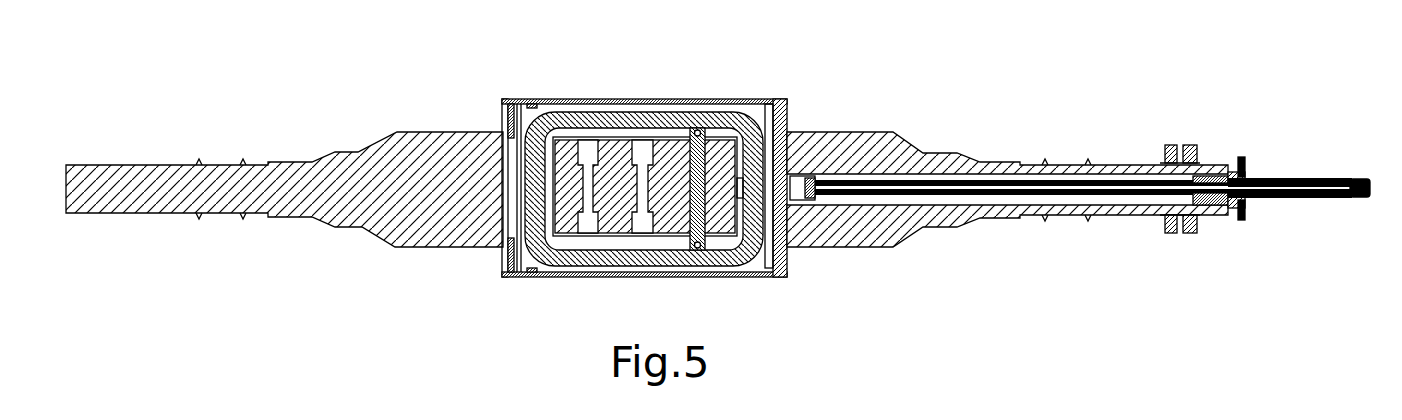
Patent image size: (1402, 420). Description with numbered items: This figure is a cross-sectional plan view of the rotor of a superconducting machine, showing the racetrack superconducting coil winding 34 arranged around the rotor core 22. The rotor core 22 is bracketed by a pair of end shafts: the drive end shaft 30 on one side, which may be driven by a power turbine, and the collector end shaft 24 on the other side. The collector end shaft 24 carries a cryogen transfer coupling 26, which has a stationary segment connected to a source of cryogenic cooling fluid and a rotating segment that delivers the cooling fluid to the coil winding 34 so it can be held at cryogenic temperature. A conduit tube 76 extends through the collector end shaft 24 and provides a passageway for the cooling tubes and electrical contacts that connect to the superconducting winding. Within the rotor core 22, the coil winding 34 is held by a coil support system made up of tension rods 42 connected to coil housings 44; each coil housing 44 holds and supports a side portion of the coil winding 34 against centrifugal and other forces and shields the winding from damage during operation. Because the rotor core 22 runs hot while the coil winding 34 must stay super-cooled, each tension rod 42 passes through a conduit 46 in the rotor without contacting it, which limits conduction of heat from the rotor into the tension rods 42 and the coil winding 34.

The rotor core 22 is at (612, 220).
The collector end shaft 24 is at (855, 228).
The cryogen transfer coupling 26 is at (1277, 198).
The drive end shaft 30 is at (410, 155).
The coil winding 34 is at (570, 112).
The tension rod 42 is at (764, 138).
The coil housing 44 is at (705, 152).
The conduit 46 is at (645, 222).
The conduit tube 76 is at (857, 173).